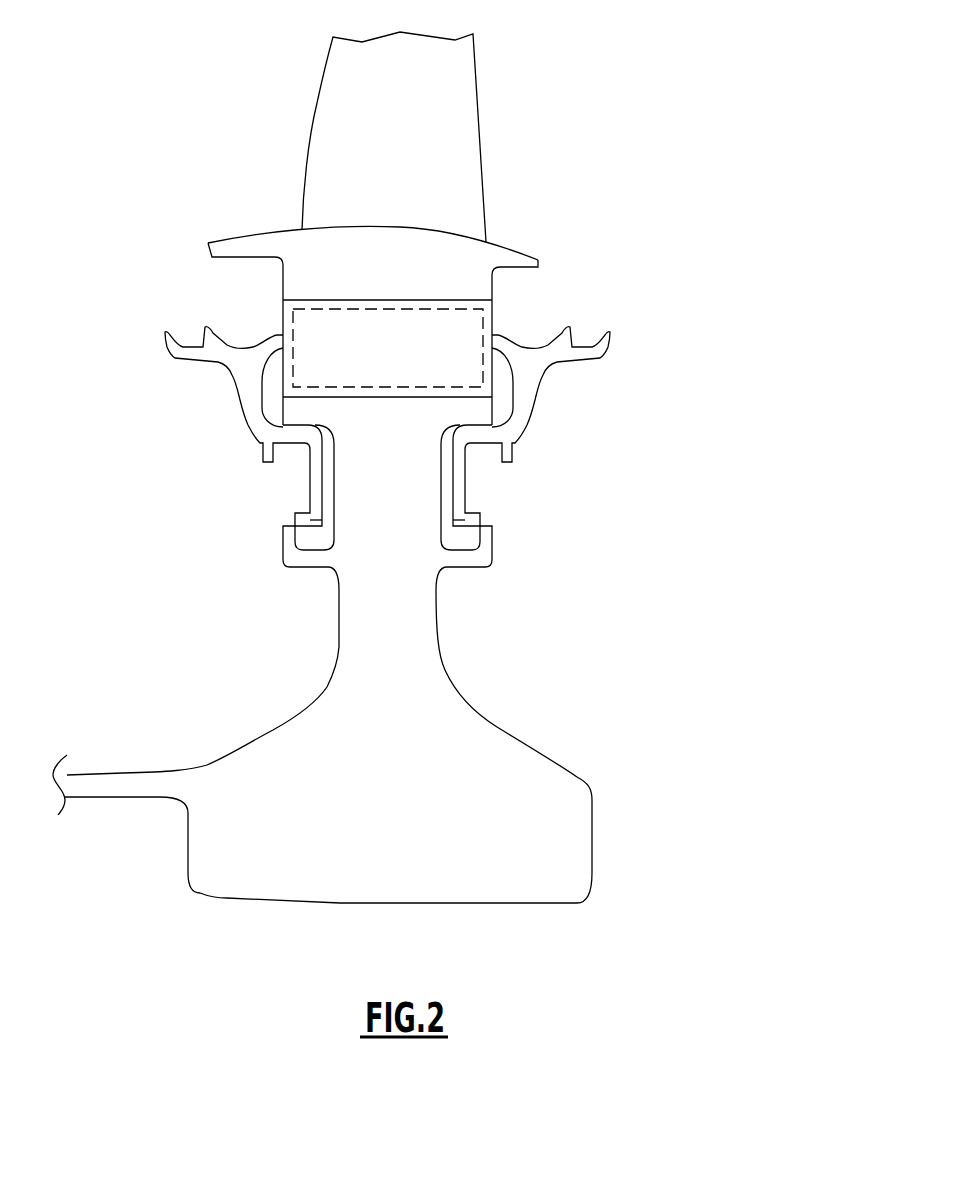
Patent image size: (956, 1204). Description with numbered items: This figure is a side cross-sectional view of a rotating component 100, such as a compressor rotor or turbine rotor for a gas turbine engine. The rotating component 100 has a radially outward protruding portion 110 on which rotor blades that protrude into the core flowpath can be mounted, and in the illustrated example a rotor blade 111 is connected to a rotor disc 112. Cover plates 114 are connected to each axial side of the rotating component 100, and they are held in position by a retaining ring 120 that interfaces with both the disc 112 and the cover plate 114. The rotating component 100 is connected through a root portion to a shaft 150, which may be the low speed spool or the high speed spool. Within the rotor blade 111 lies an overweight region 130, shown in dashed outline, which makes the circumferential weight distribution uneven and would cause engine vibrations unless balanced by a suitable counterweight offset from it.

The rotating component 100 is at (713, 351).
The radially outward protruding portion 110 is at (282, 317).
The rotor blade 111 is at (485, 187).
The rotor disc 112 is at (458, 698).
The cover plate 114 is at (537, 403).
The retaining ring 120 is at (293, 513).
The overweight region 130 is at (448, 345).
The shaft 150 is at (423, 965).